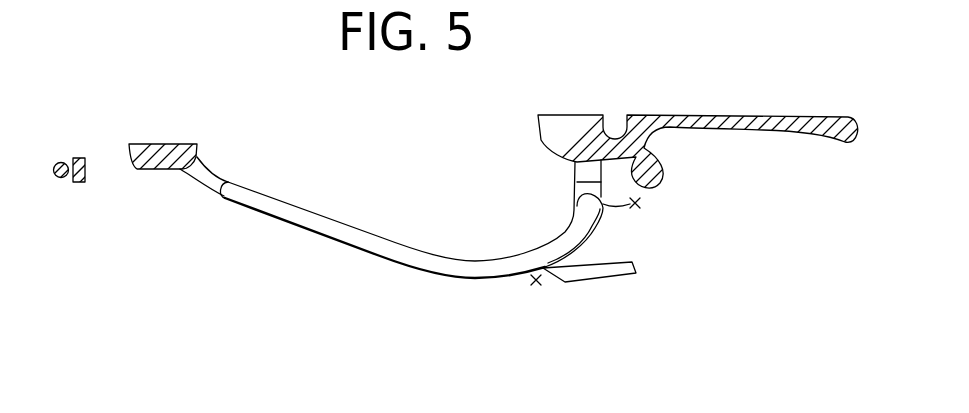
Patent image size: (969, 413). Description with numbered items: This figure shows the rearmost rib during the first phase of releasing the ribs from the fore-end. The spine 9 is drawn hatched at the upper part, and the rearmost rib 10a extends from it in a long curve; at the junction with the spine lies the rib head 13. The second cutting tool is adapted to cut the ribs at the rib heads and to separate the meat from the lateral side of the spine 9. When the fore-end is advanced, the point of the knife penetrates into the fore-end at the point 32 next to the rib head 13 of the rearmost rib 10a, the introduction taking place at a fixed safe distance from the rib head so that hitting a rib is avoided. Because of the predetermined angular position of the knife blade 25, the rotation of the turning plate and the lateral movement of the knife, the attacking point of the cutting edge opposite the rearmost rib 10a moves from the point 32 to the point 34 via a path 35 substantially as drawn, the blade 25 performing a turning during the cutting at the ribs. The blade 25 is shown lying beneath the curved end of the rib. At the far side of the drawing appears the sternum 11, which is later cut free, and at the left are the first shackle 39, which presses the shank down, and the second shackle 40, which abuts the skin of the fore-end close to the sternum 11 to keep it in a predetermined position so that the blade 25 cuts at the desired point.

The spine 9 is at (578, 128).
The rearmost rib 10a is at (290, 210).
The sternum 11 is at (166, 153).
The rib head 13 is at (582, 213).
The knife blade 25 is at (615, 273).
The point 32 is at (640, 204).
The point 34 is at (535, 286).
The path 35 is at (606, 218).
The first shackle 39 is at (57, 162).
The second shackle 40 is at (80, 184).